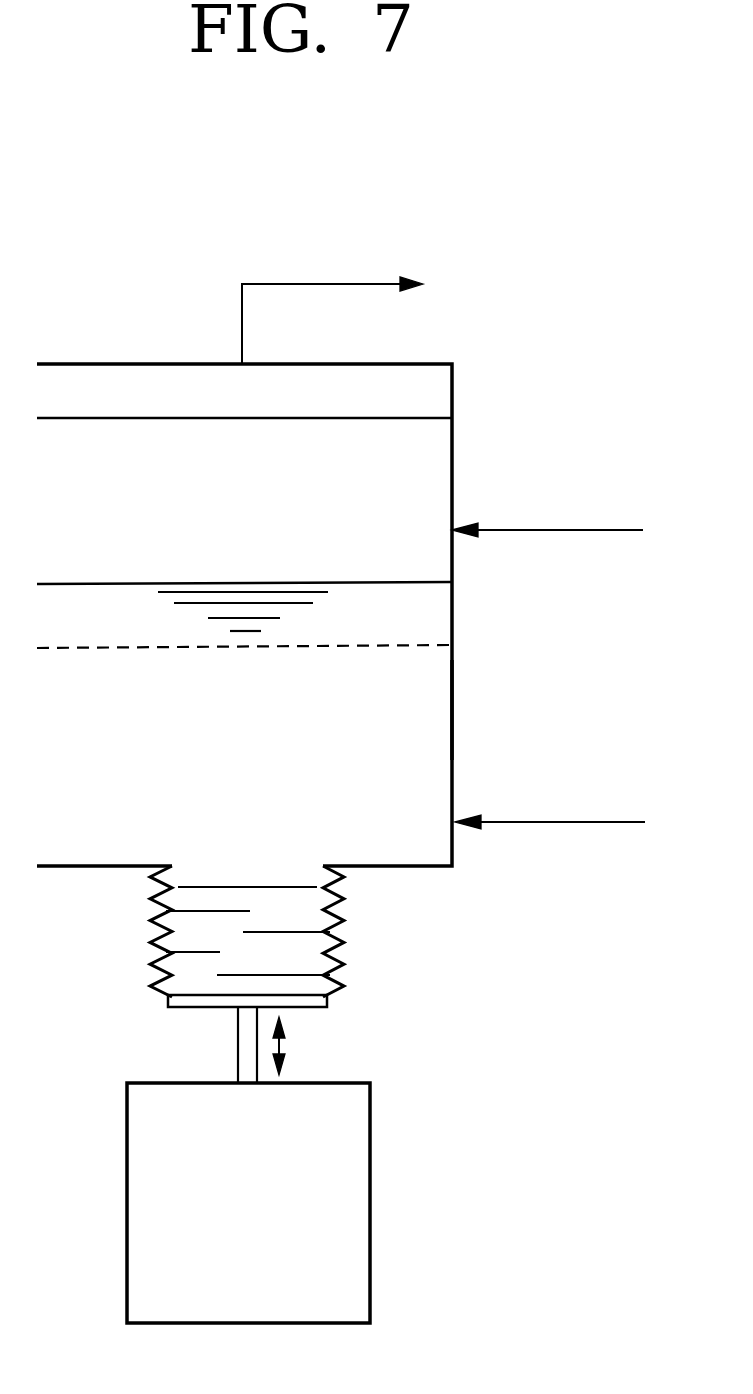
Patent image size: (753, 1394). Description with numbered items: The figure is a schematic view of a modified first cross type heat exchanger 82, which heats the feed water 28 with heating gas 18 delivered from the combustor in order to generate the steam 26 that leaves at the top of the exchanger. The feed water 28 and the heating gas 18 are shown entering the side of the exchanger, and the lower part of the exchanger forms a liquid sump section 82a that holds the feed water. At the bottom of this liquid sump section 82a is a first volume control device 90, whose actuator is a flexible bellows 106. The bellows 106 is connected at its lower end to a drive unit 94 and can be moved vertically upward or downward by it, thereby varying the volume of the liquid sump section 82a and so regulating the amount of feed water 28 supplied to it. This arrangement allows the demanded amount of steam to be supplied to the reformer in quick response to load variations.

The first cross type heat exchanger 82 is at (110, 364).
The liquid sump section 82a is at (420, 722).
The steam 26 is at (305, 282).
The heating gas 18 is at (578, 528).
The feed water 28 is at (555, 820).
The first volume control device 90 is at (384, 903).
The flexible bellows 106 is at (343, 938).
The drive unit 94 is at (370, 1210).